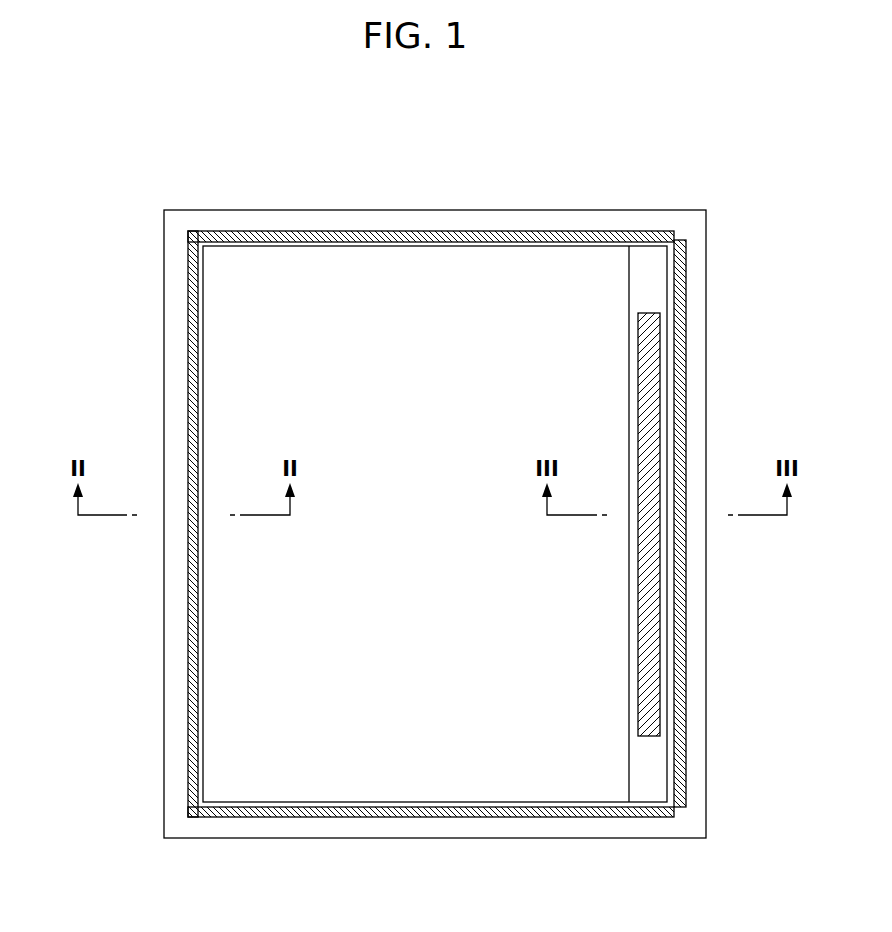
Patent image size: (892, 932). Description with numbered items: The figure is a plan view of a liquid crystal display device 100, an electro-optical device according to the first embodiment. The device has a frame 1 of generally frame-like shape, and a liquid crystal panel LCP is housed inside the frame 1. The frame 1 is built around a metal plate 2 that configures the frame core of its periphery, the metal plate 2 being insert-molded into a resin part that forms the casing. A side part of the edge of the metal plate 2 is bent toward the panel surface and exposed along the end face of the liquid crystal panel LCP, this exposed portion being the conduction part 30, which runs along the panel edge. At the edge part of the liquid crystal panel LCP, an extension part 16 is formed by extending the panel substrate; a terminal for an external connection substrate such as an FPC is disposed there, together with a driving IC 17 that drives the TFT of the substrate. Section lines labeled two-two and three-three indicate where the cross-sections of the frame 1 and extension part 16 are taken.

The liquid crystal display device 100 is at (728, 133).
The frame 1 is at (451, 194).
The conduction part 30 is at (530, 218).
The metal plate 2 is at (672, 408).
The extension part 16 is at (658, 776).
The driving IC 17 is at (650, 676).
The liquid crystal panel LCP is at (305, 268).